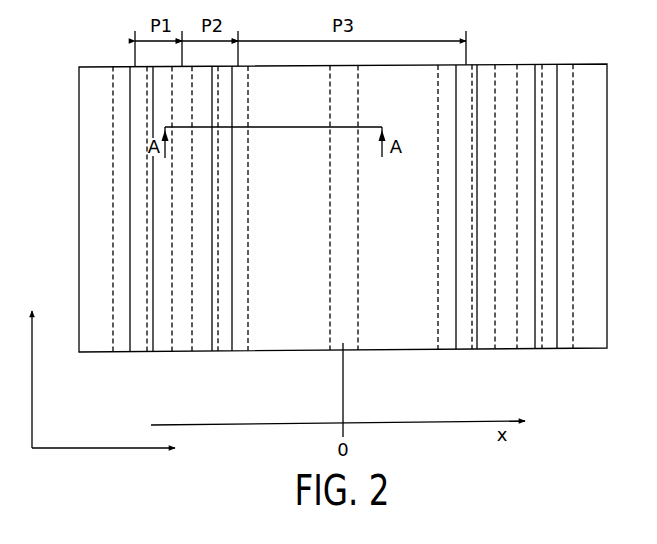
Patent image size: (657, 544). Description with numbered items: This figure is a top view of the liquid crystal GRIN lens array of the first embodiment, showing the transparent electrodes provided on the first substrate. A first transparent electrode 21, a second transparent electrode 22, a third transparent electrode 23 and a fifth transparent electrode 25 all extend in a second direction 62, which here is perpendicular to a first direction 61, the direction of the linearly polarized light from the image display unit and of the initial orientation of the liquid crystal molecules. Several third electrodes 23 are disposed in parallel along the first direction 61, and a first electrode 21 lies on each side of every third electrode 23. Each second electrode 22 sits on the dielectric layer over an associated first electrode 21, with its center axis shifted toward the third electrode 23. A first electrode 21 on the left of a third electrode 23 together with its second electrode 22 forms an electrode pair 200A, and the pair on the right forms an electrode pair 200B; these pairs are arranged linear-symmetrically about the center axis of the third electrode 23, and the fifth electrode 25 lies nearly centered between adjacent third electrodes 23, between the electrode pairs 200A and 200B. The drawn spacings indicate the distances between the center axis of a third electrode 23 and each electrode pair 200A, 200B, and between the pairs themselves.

The first transparent electrode 21 is at (121, 352).
The second transparent electrode 22 is at (139, 352).
The third transparent electrode 23 is at (182, 352).
The fifth transparent electrode 25 is at (337, 350).
The first direction 61 is at (103, 463).
The second direction 62 is at (17, 379).
The electrode pair 200A is at (98, 389).
The electrode pair 200B is at (203, 389).